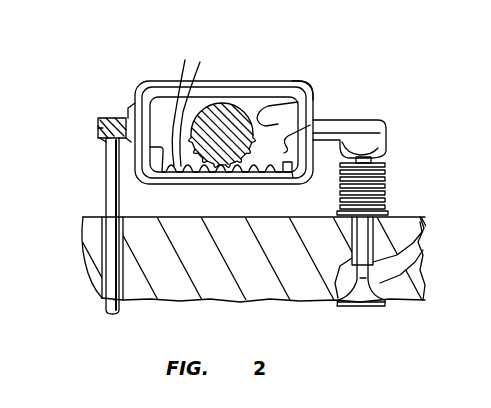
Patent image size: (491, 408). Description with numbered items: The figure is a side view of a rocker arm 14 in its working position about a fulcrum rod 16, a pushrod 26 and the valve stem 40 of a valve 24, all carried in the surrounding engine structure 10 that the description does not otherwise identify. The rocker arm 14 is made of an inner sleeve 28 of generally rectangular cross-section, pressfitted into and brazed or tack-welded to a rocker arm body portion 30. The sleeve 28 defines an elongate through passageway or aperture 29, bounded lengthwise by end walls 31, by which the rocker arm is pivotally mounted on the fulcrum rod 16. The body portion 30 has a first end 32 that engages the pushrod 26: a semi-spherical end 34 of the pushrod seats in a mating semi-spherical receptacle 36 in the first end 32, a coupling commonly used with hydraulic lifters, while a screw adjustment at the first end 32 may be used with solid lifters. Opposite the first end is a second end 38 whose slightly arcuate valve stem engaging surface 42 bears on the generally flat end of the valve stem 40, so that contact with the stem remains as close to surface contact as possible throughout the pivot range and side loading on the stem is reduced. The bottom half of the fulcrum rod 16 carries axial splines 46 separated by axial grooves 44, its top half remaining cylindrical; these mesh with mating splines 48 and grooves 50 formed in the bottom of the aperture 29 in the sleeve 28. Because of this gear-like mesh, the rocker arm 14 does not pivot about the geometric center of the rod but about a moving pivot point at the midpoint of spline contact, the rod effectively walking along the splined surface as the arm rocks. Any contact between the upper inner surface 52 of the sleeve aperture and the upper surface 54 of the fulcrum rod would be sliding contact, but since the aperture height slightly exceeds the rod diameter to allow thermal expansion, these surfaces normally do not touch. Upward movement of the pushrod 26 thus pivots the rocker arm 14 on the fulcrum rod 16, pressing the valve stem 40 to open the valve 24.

The cylinder head 10 is at (188, 272).
The rocker arm 14 is at (306, 70).
The fulcrum rod 16 is at (257, 113).
The valve 24 is at (373, 308).
The pushrod 26 is at (110, 253).
The inner sleeve 28 is at (172, 87).
The elongate through passageway or aperture 29 is at (385, 122).
The rocker arm body portion 30 is at (150, 81).
The end walls of the rocker arm aperture 31 is at (162, 172).
The first end 32 is at (98, 130).
The semi-spherical end 34 is at (107, 118).
The semi-spherical receptacle 36 is at (104, 140).
The second end 38 is at (376, 138).
The valve stem 40 is at (412, 272).
The valve stem engaging surface 42 is at (385, 158).
The axial grooves 44 is at (250, 170).
The axial splines 46 is at (256, 170).
The mating splines 48 is at (212, 96).
The mating grooves 50 is at (192, 105).
The upper inner surface of the rocker arm sleeve aperture 52 is at (296, 88).
The upper surface of the fulcrum rod 54 is at (253, 108).